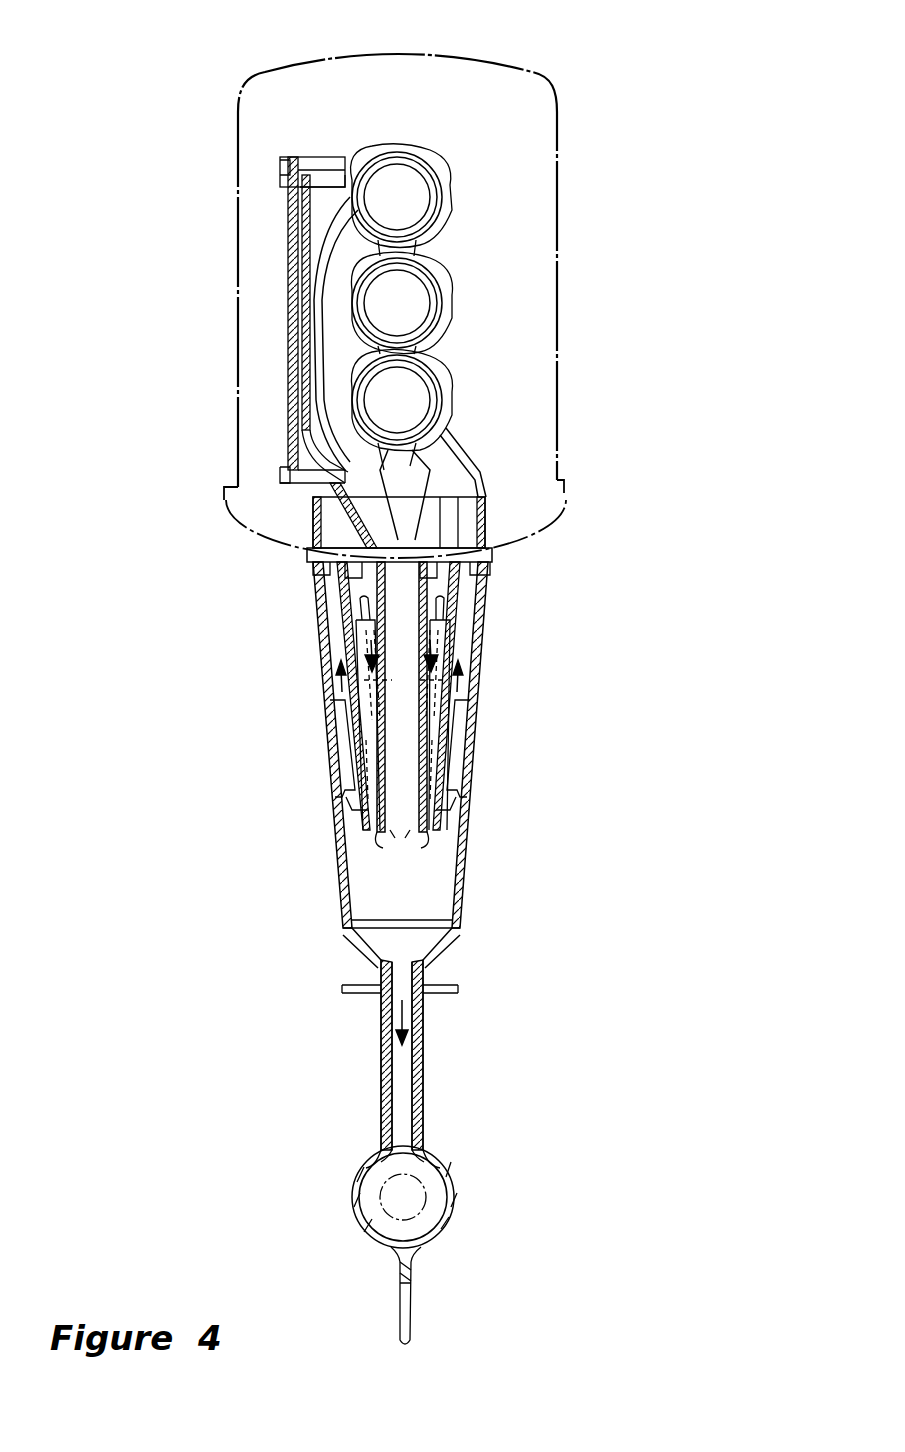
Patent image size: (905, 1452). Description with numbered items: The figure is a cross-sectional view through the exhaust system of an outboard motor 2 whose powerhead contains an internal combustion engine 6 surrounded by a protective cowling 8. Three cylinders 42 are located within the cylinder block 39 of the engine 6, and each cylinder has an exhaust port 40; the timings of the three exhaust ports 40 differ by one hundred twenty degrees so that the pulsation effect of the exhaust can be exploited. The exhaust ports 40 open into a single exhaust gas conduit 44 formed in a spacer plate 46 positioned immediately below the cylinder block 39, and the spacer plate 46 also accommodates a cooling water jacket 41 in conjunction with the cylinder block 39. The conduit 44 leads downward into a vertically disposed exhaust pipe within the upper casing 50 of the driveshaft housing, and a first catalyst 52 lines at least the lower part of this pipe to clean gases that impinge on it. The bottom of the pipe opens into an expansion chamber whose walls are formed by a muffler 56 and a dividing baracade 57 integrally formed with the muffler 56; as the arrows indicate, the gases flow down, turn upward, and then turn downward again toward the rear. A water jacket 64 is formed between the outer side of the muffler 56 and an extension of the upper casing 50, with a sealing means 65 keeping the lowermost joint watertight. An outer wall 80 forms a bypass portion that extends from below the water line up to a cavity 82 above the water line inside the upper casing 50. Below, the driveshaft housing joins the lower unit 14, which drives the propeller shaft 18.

The outboard motor 2 is at (598, 96).
The internal combustion engine 6 is at (458, 255).
The protective cowling 8 is at (562, 374).
The lower unit 14 is at (422, 1093).
The propeller shaft 18 is at (403, 1200).
The cylinder block 39 is at (440, 440).
The exhaust ports 40 is at (325, 405).
The cooling water jacket 41 is at (457, 512).
The cylinders 42 is at (392, 400).
The exhaust gas conduit 44 is at (373, 512).
The spacer plate 46 is at (483, 513).
The upper casing 50 is at (470, 795).
The first catalyst 52 is at (408, 835).
The muffler 56 is at (483, 592).
The dividing baracade 57 is at (365, 645).
The water jacket 64 is at (448, 825).
The sealing means 65 is at (440, 935).
The outer wall 80 is at (462, 732).
The cavity 82 is at (463, 650).